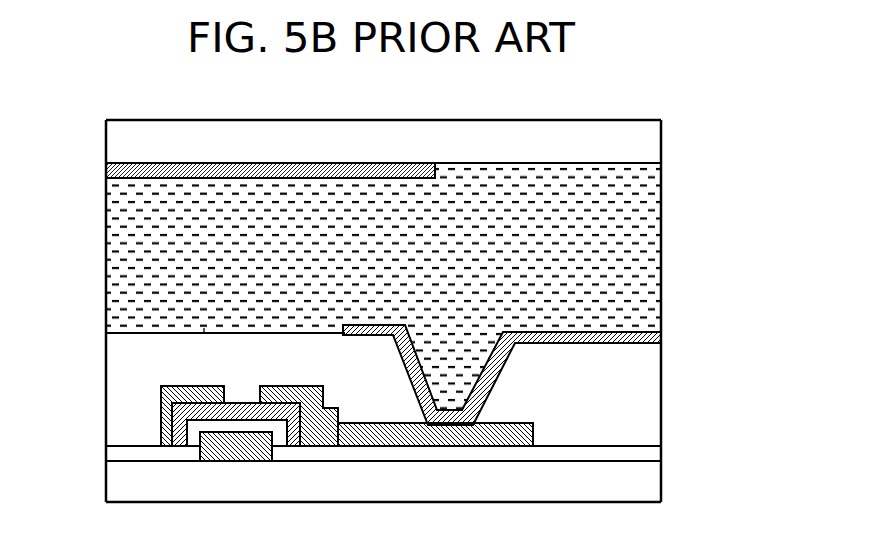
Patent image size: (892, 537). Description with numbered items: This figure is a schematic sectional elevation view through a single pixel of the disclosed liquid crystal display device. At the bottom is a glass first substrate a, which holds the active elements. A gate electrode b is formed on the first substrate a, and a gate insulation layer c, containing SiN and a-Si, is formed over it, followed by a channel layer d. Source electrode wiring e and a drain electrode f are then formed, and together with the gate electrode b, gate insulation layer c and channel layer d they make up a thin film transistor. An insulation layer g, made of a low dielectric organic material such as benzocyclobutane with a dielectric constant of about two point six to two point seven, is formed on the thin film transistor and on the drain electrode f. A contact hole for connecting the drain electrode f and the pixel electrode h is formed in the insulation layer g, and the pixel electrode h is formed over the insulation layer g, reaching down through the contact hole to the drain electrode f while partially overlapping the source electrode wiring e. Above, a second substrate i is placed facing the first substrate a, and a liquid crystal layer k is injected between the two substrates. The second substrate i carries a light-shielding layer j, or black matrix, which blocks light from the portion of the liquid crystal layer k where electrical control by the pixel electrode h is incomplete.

The first substrate a is at (625, 492).
The gate electrode b is at (200, 450).
The gate insulation layer c is at (617, 457).
The channel layer d is at (162, 415).
The source electrode wiring e is at (160, 392).
The drain electrode f is at (533, 438).
The insulation layer g is at (440, 355).
The pixel electrode h is at (643, 338).
The second substrate i is at (120, 142).
The light-shielding layer j is at (110, 172).
The liquid crystal layer k is at (613, 228).